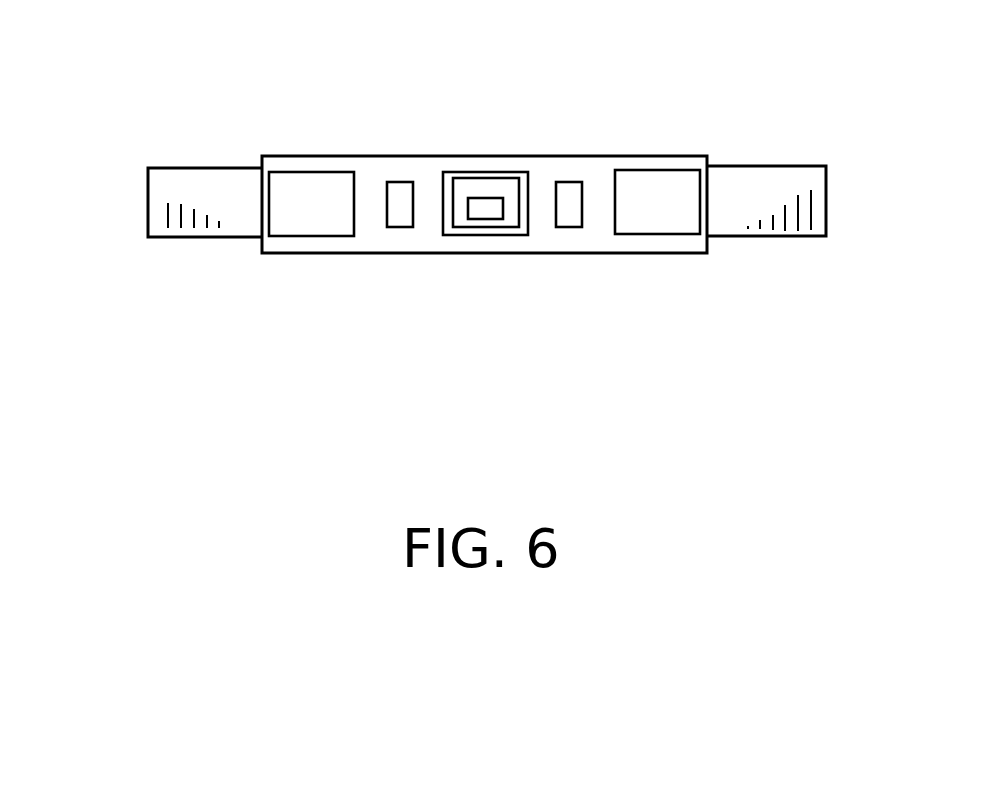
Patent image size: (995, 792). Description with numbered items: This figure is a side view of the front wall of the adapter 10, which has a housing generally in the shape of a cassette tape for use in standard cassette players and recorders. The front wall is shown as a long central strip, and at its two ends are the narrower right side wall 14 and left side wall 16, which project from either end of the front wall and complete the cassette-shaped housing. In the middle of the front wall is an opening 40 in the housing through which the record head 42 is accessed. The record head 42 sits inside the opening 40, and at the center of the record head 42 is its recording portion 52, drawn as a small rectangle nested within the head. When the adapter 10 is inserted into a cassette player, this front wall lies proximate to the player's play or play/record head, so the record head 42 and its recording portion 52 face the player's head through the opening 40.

The adapter 10 is at (343, 128).
The right side wall 14 is at (826, 183).
The left side wall 16 is at (148, 202).
The opening 40 is at (480, 235).
The record head 42 is at (505, 193).
The recording portion 52 is at (485, 208).